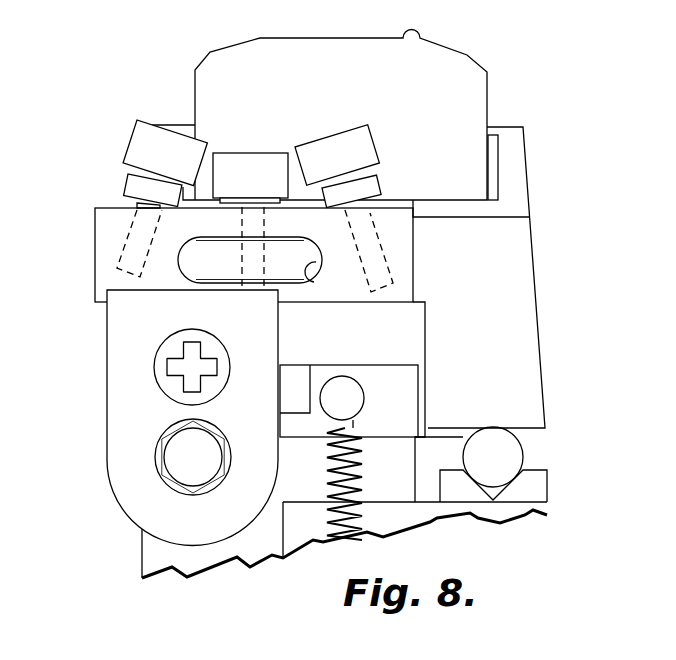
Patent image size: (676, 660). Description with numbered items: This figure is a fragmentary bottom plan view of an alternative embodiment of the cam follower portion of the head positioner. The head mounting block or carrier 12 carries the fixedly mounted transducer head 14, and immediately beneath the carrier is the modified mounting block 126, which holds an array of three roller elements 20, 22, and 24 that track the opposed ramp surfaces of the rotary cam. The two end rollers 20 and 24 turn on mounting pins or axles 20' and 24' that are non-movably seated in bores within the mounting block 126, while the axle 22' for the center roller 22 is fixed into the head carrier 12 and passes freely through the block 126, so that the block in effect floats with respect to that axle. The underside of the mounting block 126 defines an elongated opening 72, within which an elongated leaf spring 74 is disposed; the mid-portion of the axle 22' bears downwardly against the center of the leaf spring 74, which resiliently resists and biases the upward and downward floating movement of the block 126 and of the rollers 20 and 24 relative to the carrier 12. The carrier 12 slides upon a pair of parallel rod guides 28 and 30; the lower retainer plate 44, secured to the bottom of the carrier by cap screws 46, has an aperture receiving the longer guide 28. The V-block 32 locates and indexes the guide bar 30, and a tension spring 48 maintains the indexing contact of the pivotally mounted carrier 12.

The head mounting block 12 is at (512, 173).
The head 14 is at (465, 82).
The roller element 20 is at (165, 146).
The roller element 22 is at (250, 157).
The roller element 24 is at (362, 166).
The mounting pin 20' is at (97, 243).
The mounting pin 22' is at (279, 247).
The mounting pin 24' is at (409, 251).
The mounting block 126 is at (105, 267).
The leaf spring 74 is at (227, 268).
The elongated opening 72 is at (313, 280).
The lower retainer plate 44 is at (143, 422).
The cap screw 46 is at (193, 308).
The guide member 28 is at (200, 453).
The tension spring 48 is at (360, 425).
The guide member 30 is at (505, 450).
The V-block 32 is at (533, 490).